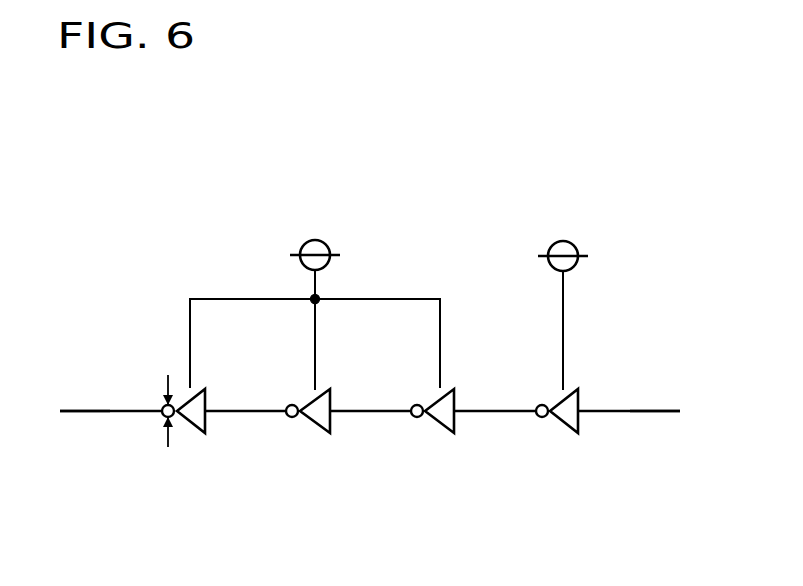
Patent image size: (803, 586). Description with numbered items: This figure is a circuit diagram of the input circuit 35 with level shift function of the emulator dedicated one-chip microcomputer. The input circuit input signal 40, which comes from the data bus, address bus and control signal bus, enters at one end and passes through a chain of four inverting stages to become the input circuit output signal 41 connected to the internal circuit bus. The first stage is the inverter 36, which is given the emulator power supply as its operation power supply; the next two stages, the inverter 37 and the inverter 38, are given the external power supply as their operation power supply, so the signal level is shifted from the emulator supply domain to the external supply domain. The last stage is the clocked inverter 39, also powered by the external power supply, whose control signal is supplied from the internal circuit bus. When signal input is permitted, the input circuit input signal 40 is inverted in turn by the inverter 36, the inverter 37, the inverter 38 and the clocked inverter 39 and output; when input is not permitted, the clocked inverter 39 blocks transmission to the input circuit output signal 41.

The input circuit with level shift function 35 is at (381, 341).
The inverter 36 is at (553, 403).
The inverter 37 is at (428, 398).
The inverter 38 is at (298, 400).
The clocked inverter 39 is at (162, 383).
The input circuit input signal 40 is at (630, 440).
The input circuit output signal 41 is at (108, 423).